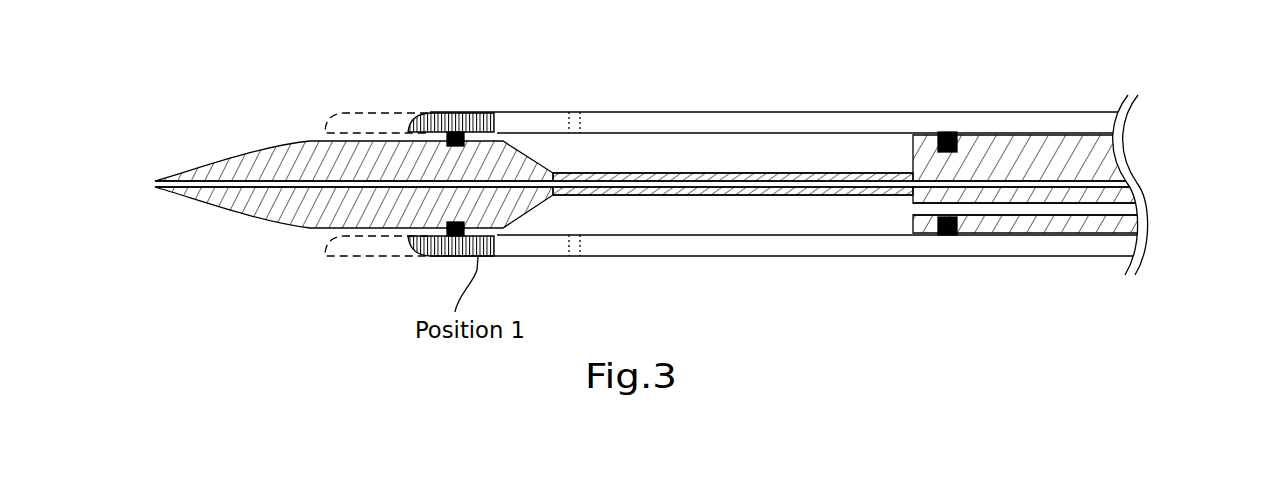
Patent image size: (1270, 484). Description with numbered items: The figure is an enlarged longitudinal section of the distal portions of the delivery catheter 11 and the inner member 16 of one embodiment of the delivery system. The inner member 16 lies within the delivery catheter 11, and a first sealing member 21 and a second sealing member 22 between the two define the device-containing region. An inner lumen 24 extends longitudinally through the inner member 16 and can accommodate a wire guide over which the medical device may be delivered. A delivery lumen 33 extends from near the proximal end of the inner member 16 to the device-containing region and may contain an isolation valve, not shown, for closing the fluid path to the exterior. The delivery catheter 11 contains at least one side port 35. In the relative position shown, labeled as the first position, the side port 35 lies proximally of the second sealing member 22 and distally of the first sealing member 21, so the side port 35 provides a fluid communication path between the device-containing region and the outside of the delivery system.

The delivery catheter 11 is at (786, 258).
The inner member 16 is at (1033, 235).
The first sealing member 21 is at (950, 132).
The second sealing member 22 is at (456, 112).
The inner lumen 24 is at (1113, 186).
The delivery lumen 33 is at (1131, 208).
The side port 35 is at (575, 112).